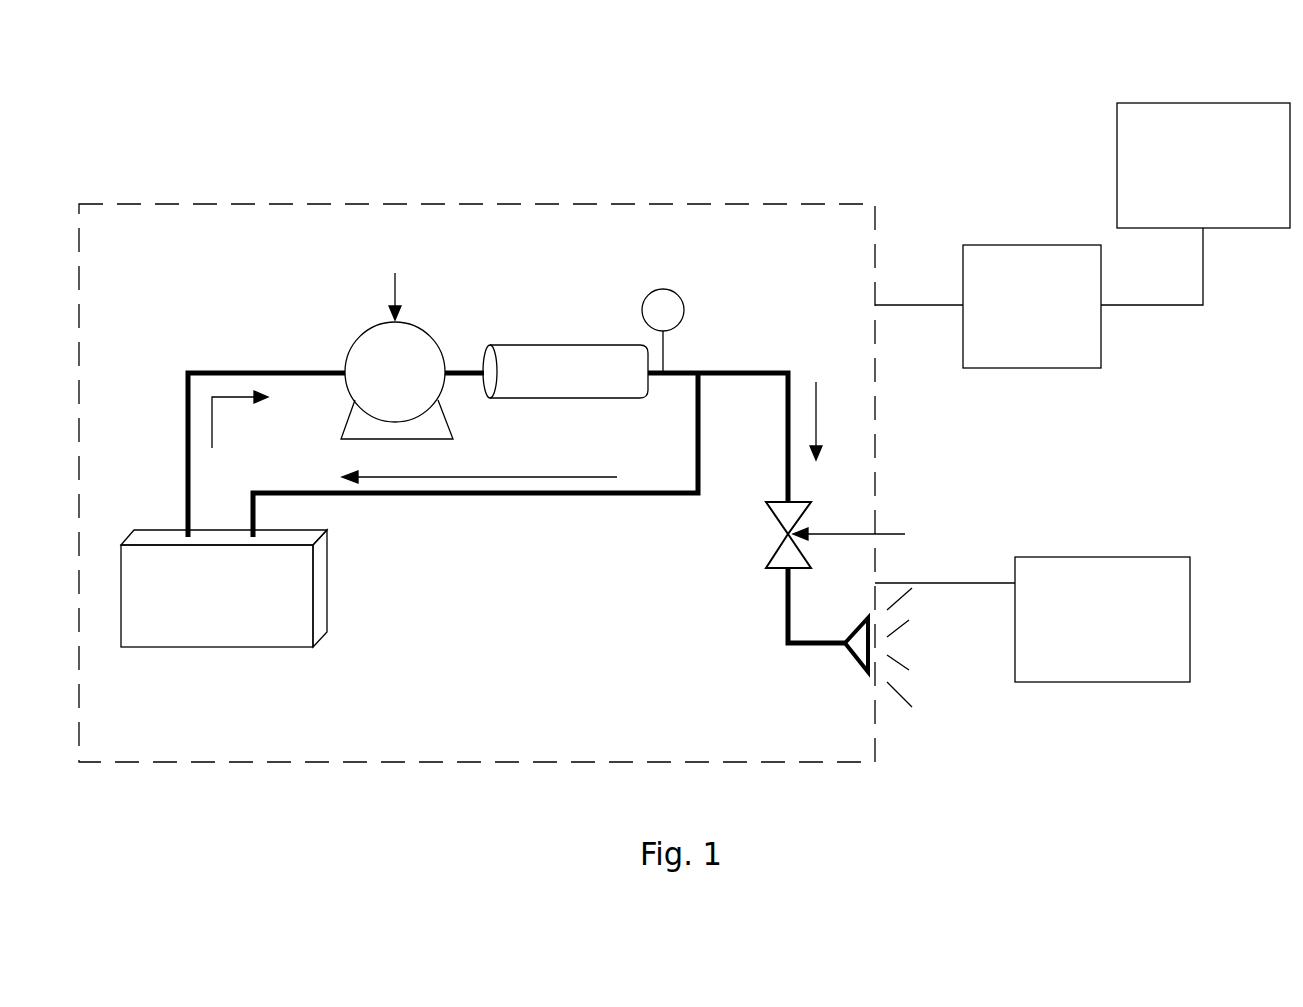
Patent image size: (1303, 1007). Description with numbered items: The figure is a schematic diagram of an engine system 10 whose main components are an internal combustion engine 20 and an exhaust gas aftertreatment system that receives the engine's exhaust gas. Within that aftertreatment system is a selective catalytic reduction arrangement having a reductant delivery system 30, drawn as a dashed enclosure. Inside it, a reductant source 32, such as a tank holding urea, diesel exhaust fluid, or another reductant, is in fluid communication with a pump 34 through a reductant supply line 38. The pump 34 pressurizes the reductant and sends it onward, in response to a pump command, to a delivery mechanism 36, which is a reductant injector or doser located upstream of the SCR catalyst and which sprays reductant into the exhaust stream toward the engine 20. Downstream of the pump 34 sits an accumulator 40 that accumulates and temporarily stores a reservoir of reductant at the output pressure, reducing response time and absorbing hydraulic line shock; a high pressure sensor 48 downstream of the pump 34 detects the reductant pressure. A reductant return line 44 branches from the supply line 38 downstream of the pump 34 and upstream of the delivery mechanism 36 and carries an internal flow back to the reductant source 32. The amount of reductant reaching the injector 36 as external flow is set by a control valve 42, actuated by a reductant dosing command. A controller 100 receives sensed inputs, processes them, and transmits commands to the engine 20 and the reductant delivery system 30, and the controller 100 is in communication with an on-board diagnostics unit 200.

The engine system 10 is at (1094, 56).
The internal combustion engine 20 is at (1102, 619).
The reductant delivery system 30 is at (912, 233).
The reductant source 32 is at (313, 587).
The pump 34 is at (356, 347).
The delivery mechanism 36 is at (850, 657).
The reductant supply line 38 is at (186, 457).
The accumulator 40 is at (537, 345).
The control valve 42 is at (806, 521).
The reductant return line 44 is at (500, 495).
The pressure sensor 48 is at (650, 291).
The controller 100 is at (1039, 405).
The on-board diagnostics (OBD) unit 200 is at (1203, 165).